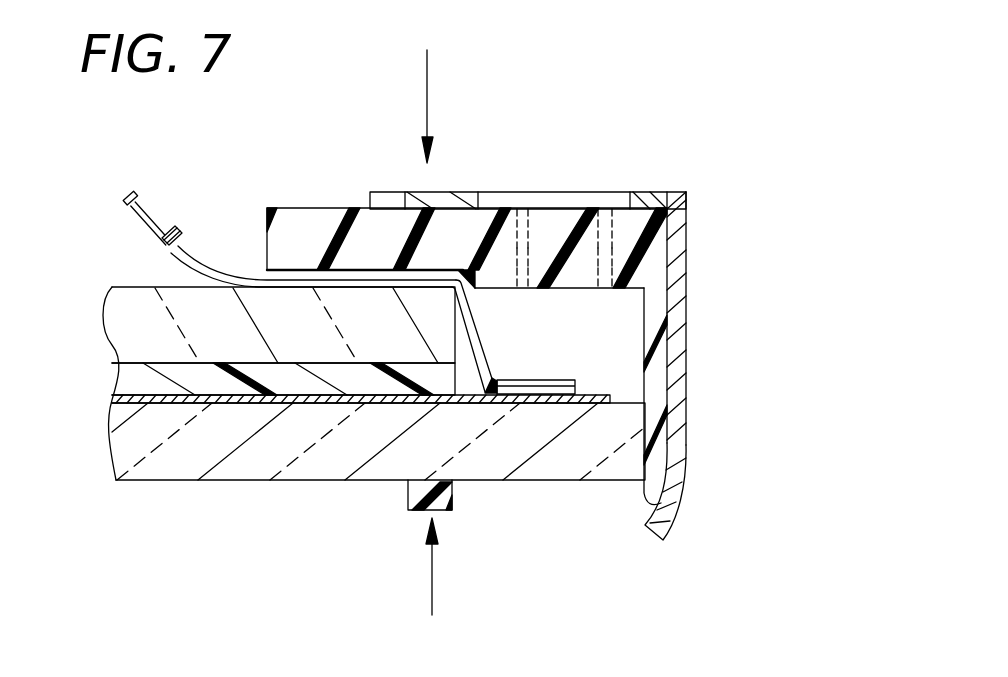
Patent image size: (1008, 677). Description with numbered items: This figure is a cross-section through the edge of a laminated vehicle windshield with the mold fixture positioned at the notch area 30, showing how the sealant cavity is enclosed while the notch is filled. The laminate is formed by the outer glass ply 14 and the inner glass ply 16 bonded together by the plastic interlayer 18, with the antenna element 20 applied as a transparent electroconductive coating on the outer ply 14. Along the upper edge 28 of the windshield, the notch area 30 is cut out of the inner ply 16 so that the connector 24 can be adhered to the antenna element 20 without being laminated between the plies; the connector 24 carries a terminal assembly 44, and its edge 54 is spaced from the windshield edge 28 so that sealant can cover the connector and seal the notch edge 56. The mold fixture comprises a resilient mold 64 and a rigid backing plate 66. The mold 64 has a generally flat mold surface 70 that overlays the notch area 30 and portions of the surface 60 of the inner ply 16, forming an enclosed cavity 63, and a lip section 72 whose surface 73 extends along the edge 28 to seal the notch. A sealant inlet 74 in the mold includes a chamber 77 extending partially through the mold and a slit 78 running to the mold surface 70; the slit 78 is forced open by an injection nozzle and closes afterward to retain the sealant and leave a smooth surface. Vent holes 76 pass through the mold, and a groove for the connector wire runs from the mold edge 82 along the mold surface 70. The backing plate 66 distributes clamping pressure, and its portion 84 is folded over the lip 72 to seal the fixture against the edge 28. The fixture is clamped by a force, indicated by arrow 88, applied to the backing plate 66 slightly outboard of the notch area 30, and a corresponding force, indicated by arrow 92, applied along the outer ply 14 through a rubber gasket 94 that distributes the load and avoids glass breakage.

The outer glass ply 14 is at (110, 438).
The inner glass ply 16 is at (110, 295).
The plastic interlayer 18 is at (115, 377).
The antenna element 20 is at (177, 405).
The connector 24 is at (160, 209).
The upper edge 28 is at (668, 418).
The notch area 30 is at (457, 333).
The terminal assembly 44 is at (143, 193).
The edge of the connector 54 is at (533, 374).
The notch edge 56 is at (478, 360).
The surface of inner glass ply 60 is at (133, 287).
The enclosed cavity 63 is at (627, 373).
The resilient mold 64 is at (325, 208).
The rigid backing plate 66 is at (592, 192).
The mold surface 70 is at (565, 288).
The lip section 72 is at (667, 362).
The surface of lip section 73 is at (683, 317).
The sealant inlet 74 is at (528, 192).
The vent holes 76 is at (617, 248).
The chamber 77 is at (513, 258).
The slit 78 is at (523, 288).
The edge of the mold 82 is at (264, 230).
The folded portion of backing plate 84 is at (686, 470).
The clamping force arrow 88 is at (427, 88).
The corresponding force arrow 92 is at (432, 557).
The rubber gasket 94 is at (408, 497).